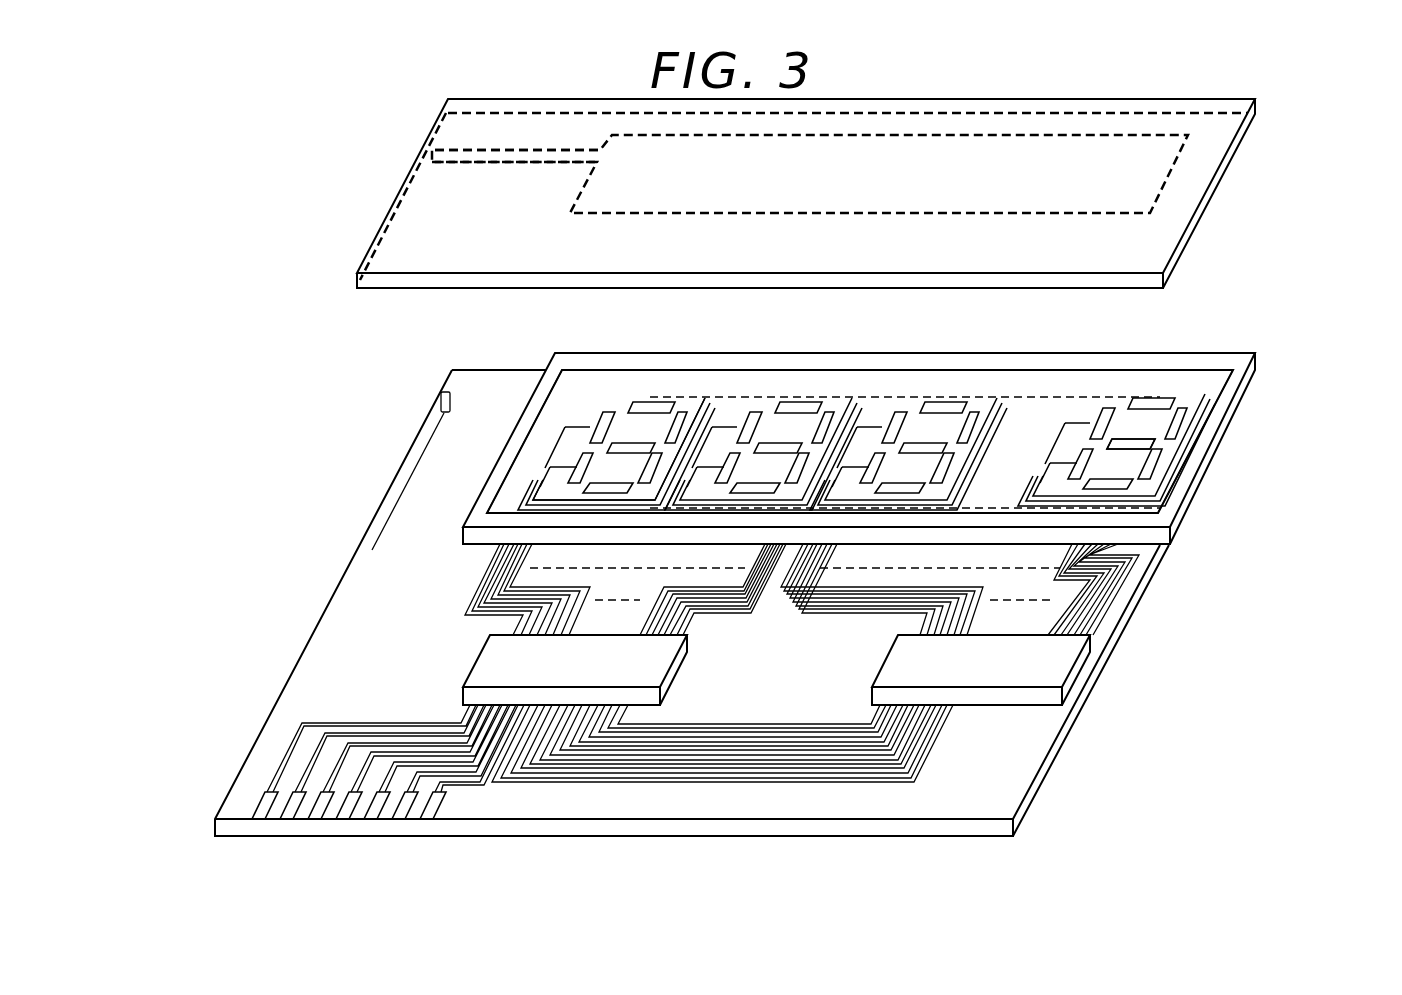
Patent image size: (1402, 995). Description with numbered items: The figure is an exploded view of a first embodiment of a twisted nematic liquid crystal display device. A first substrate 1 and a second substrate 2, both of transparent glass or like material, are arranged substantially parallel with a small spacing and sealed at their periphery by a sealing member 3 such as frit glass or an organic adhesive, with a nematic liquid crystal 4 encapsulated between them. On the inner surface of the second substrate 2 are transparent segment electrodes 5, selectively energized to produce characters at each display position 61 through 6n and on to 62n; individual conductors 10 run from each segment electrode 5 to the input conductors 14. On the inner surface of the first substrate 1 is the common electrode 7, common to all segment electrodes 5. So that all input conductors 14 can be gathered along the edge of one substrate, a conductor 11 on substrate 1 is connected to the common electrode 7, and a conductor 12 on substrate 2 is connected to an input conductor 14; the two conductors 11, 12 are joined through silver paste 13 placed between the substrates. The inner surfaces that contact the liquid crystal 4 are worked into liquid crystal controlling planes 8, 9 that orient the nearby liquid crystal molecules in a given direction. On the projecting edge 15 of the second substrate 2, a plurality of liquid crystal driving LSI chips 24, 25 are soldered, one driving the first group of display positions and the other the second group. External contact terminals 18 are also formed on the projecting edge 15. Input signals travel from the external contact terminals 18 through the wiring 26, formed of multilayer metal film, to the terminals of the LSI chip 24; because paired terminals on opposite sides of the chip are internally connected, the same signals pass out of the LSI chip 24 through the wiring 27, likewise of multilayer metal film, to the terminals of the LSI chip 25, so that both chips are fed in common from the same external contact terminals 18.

The first substrate 1 is at (1210, 130).
The second substrate 2 is at (1140, 572).
The sealing member 3 is at (1213, 428).
The nematic liquid crystal 4 is at (1213, 392).
The segment electrodes 5 is at (1107, 447).
The first display position 61 is at (625, 395).
The n-th display position 6n is at (800, 395).
The 2n-th display position 62n is at (1125, 395).
The common electrode 7 is at (1130, 187).
The liquid crystal controlling plane 8 is at (1157, 243).
The liquid crystal controlling plane 9 is at (1043, 430).
The individual conductors 10 is at (692, 427).
The conductor 11 is at (468, 157).
The conductor 12 is at (416, 445).
The silver paste 13 is at (440, 400).
The input conductors 14 is at (478, 592).
The projecting edge 15 is at (1025, 748).
The external contact terminals 18 is at (260, 818).
The liquid crystal driving LSI chip 24 is at (490, 665).
The liquid crystal driving LSI chip 25 is at (1055, 665).
The wiring 26 is at (290, 757).
The wiring 27 is at (923, 762).